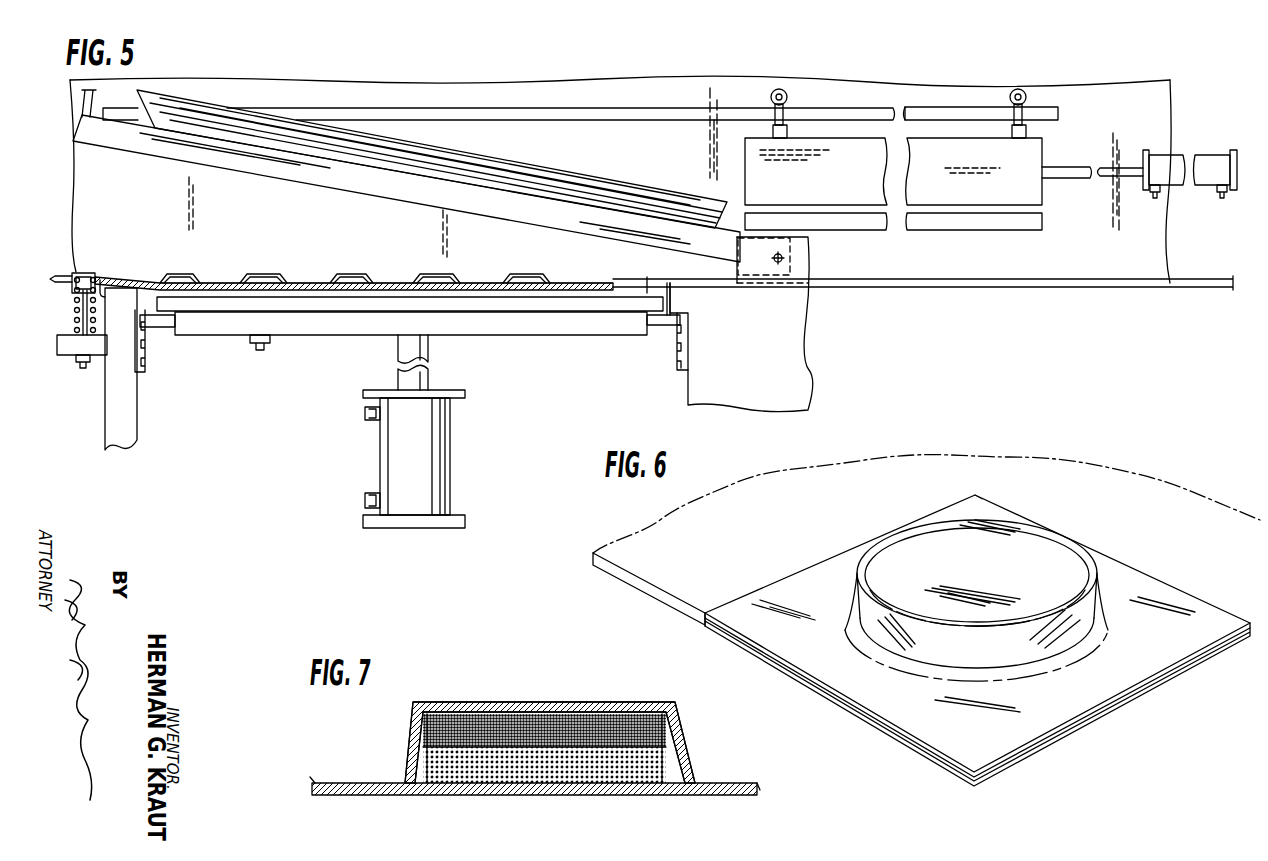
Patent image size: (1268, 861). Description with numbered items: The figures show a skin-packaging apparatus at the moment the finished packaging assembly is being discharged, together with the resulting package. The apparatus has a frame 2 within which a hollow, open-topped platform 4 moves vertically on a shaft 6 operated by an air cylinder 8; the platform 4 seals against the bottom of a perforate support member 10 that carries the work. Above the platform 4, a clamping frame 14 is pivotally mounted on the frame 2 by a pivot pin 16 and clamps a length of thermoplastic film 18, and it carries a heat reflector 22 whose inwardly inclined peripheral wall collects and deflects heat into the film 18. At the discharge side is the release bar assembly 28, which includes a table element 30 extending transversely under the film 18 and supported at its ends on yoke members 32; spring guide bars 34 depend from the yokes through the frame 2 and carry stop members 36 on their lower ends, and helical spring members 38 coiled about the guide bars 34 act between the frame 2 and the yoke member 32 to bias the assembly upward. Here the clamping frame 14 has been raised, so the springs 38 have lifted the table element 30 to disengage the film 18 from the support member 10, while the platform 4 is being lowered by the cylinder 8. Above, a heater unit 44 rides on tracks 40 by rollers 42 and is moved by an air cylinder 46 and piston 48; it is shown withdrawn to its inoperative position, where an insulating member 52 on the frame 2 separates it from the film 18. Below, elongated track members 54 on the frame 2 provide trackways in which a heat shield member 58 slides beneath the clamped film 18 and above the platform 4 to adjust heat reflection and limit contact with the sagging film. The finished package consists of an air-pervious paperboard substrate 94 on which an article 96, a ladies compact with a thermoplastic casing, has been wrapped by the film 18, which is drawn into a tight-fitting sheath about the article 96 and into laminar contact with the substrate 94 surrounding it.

In FIG. 5, the apparatus frame 2 is at (511, 82).
In FIG. 5, the platform 4 is at (552, 336).
In FIG. 5, the shaft 6 is at (430, 383).
In FIG. 5, the air cylinder 8 is at (450, 478).
In FIG. 5, the perforate support member 10 is at (367, 312).
In FIG. 5, the clamping frame 14 is at (427, 206).
In FIG. 5, the pivot pin 16 is at (793, 260).
In FIG. 5, the thermoplastic film 18 is at (305, 283).
In FIG. 6, the thermoplastic film 18 is at (1088, 710).
In FIG. 7, the thermoplastic film 18 is at (673, 753).
In FIG. 5, the heat reflector 22 is at (500, 152).
In FIG. 5, the release bar assembly 28 is at (94, 270).
In FIG. 5, the table element 30 is at (112, 296).
In FIG. 5, the yoke member 32 is at (73, 273).
In FIG. 5, the spring guide bar 34 is at (78, 366).
In FIG. 5, the stop member 36 is at (97, 360).
In FIG. 5, the spring member 38 is at (75, 298).
In FIG. 5, the track 40 is at (933, 106).
In FIG. 5, the roller 42 is at (785, 88).
In FIG. 5, the heater unit 44 is at (1047, 153).
In FIG. 5, the air cylinder 46 is at (1213, 158).
In FIG. 5, the piston 48 is at (1127, 164).
In FIG. 5, the insulating member 52 is at (947, 232).
In FIG. 5, the track member 54 is at (145, 372).
In FIG. 5, the heat shield member 58 is at (658, 328).
In FIG. 5, the substrate 94 is at (233, 300).
In FIG. 6, the substrate 94 is at (1077, 730).
In FIG. 7, the substrate 94 is at (705, 796).
In FIG. 5, the article 96 is at (180, 278).
In FIG. 6, the article 96 is at (1073, 543).
In FIG. 7, the article 96 is at (673, 740).